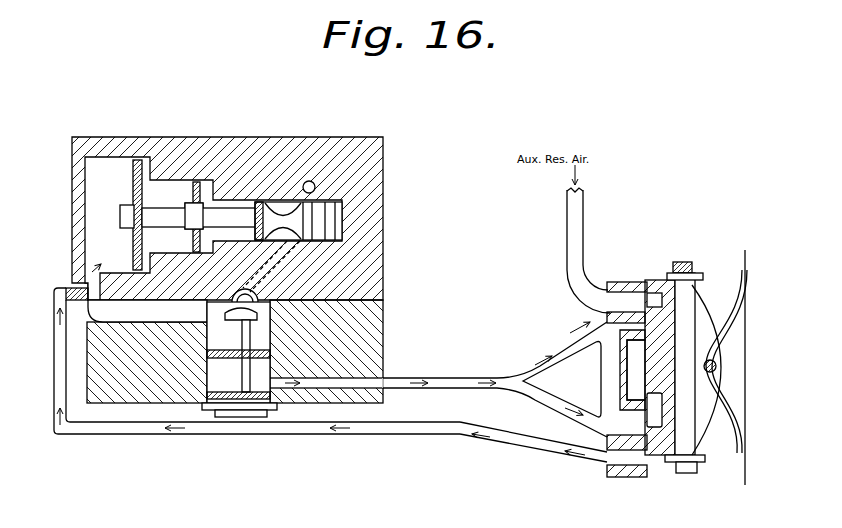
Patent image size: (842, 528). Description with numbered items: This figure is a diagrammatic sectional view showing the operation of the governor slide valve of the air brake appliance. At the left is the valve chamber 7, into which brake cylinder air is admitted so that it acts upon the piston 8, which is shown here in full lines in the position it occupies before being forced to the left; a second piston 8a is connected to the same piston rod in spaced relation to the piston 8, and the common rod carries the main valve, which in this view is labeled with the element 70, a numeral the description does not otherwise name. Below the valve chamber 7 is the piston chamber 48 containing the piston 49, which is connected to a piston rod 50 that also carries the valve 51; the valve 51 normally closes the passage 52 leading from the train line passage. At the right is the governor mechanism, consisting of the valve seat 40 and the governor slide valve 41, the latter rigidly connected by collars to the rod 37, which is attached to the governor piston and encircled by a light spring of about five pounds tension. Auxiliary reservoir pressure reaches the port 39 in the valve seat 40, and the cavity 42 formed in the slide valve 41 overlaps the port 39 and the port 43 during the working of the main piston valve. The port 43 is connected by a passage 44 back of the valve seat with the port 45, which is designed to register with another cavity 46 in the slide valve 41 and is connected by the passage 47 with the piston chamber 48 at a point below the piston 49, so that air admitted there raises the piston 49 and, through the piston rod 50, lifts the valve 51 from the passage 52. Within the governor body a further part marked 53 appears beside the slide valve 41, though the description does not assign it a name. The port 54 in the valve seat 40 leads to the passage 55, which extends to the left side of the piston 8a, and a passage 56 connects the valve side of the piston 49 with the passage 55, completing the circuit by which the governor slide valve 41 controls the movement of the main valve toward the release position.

The valve chamber 7 is at (243, 207).
The piston 8 is at (197, 183).
The piston 8a is at (142, 181).
The slide valve 70 is at (318, 222).
The passage 52 is at (316, 188).
The piston chamber 48 is at (265, 335).
The valve 51 is at (258, 320).
The piston 49 is at (265, 359).
The piston rod 50 is at (238, 377).
The passage 56 is at (117, 320).
The passage 55 is at (487, 434).
The passage 47 is at (455, 382).
The passage 44 is at (617, 393).
The port 39 is at (613, 293).
The port 43 is at (612, 322).
The cavity 42 is at (650, 297).
The valve seat 40 is at (622, 377).
The piston 53 is at (640, 355).
The cavity 46 is at (655, 417).
The port 45 is at (612, 447).
The port 54 is at (653, 460).
The governor slide valve 41 is at (673, 422).
The rod 37 is at (689, 471).